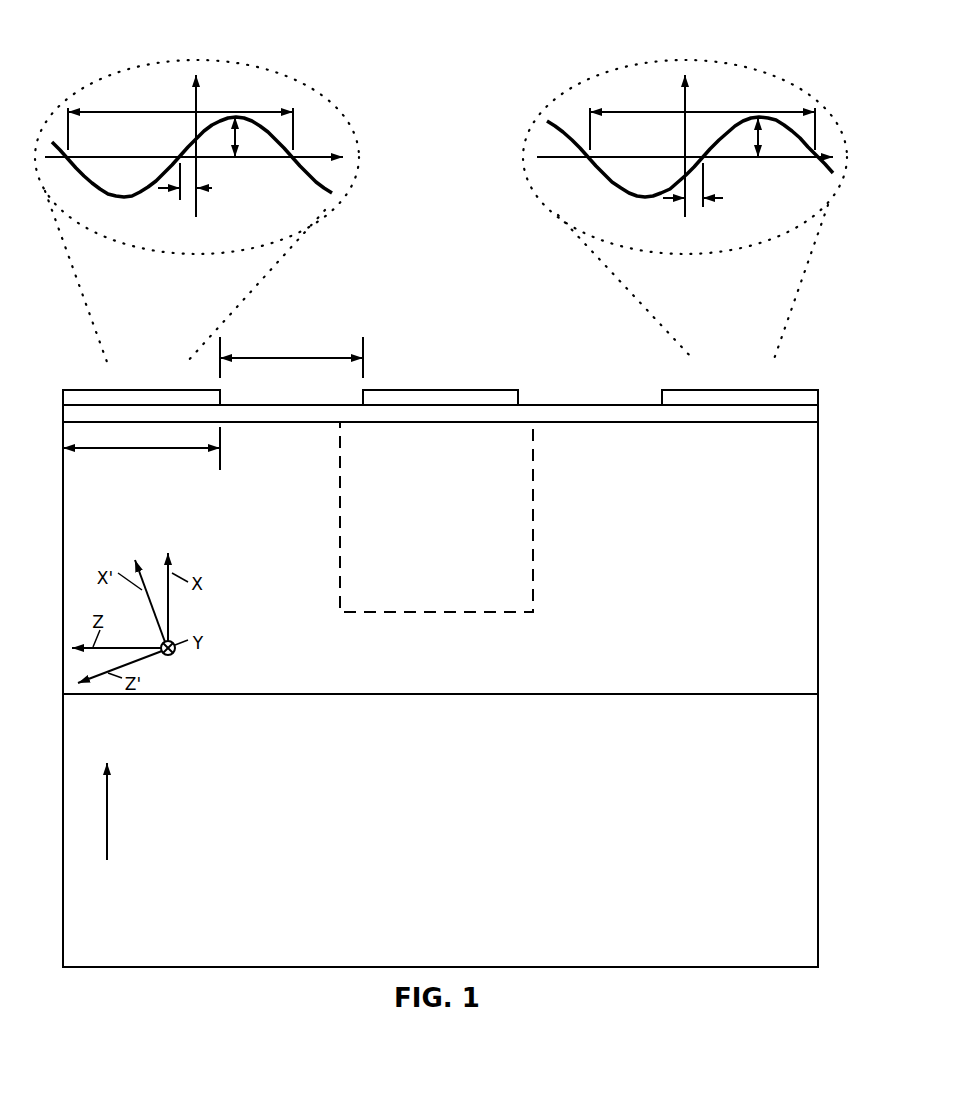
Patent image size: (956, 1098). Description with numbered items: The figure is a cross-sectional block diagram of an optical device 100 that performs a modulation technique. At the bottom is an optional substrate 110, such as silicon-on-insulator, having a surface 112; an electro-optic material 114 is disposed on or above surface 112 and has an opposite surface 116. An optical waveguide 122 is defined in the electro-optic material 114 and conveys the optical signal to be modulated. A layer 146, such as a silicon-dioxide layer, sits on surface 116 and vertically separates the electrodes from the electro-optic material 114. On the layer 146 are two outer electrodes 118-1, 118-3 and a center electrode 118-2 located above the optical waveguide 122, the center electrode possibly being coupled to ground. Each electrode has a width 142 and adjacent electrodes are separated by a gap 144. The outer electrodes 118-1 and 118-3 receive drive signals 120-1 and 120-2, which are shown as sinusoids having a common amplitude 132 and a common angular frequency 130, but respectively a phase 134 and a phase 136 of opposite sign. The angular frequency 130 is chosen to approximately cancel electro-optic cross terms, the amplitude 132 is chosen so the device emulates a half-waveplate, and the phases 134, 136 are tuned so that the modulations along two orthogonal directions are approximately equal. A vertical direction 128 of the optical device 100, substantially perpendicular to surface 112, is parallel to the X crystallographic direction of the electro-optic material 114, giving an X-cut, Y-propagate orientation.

The optical device 100 is at (525, 258).
The substrate 110 is at (440, 830).
The surface 112 is at (700, 694).
The electro-optic material 114 is at (470, 558).
The surface 116 is at (780, 422).
The outer electrode 118-1 is at (152, 398).
The center electrode 118-2 is at (380, 398).
The outer electrode 118-3 is at (673, 398).
The drive signal 120-1 is at (272, 72).
The drive signal 120-2 is at (612, 72).
The optical waveguide 122 is at (436, 517).
The vertical direction 128 is at (107, 797).
The angular frequency 130 is at (165, 113).
The amplitude 132 is at (222, 122).
The phase 134 is at (187, 193).
The phase 136 is at (692, 205).
The width 142 is at (92, 448).
The gap 144 is at (278, 355).
The layer 146 is at (573, 412).